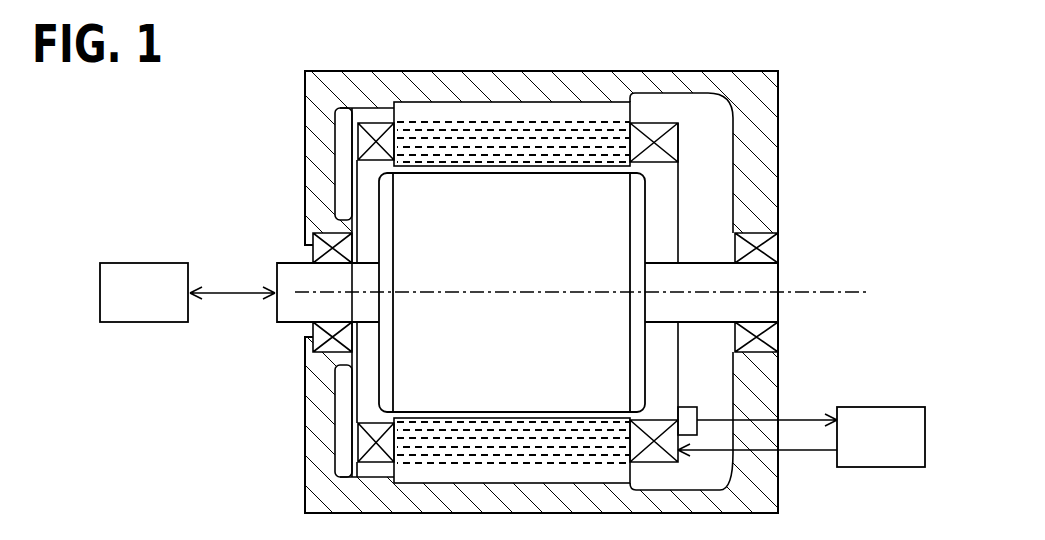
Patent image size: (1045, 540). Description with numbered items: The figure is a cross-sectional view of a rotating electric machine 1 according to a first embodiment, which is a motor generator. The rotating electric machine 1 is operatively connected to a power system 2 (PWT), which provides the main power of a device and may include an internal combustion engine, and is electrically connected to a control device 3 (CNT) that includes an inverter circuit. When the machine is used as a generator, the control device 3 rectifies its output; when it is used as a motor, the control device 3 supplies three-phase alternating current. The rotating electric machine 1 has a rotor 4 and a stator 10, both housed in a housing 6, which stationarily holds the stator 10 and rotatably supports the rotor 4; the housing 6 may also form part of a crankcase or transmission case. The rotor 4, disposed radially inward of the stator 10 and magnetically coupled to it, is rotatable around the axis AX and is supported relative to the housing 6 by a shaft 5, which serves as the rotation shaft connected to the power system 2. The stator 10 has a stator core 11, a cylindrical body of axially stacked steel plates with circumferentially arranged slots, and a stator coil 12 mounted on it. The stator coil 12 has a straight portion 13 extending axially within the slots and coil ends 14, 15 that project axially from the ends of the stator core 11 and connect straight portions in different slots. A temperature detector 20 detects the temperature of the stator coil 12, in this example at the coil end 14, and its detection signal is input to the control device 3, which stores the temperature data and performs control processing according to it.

The rotating electric machine 1 is at (826, 91).
The power system 2 is at (149, 262).
The control device 3 is at (866, 407).
The rotor 4 is at (378, 191).
The shaft 5 is at (291, 263).
The housing 6 is at (300, 372).
The stator 10 is at (340, 111).
The stator core 11 is at (428, 102).
The stator coil 12 is at (347, 133).
The straight portion 13 is at (510, 122).
The coil end 14 is at (643, 123).
The coil end 15 is at (370, 123).
The temperature detector 20 is at (697, 407).